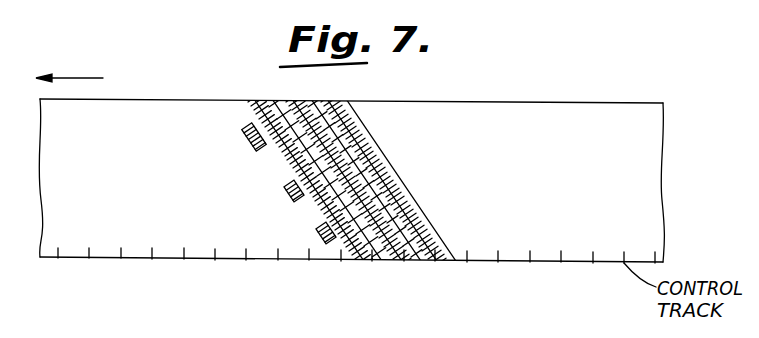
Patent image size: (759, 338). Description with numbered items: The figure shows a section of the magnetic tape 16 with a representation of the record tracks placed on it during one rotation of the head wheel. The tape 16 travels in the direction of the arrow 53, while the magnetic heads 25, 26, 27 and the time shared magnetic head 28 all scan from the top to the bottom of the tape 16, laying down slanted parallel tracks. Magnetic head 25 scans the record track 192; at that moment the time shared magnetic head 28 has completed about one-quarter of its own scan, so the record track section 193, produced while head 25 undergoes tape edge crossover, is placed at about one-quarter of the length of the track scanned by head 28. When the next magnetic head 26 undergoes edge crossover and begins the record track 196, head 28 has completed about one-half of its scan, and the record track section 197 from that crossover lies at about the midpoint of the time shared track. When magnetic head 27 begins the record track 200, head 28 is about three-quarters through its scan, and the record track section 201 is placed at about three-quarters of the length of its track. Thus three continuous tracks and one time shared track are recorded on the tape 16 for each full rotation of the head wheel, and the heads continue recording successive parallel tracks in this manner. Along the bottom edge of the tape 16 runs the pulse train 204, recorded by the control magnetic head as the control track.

The magnetic tape 16 is at (524, 102).
The arrow 53 is at (78, 78).
The pulse train 204 is at (117, 258).
The magnetic head 25 is at (355, 245).
The magnetic head 26 is at (394, 260).
The magnetic head 27 is at (437, 248).
The record track 192 is at (277, 102).
The record track 196 is at (307, 102).
The record track 200 is at (344, 110).
The time shared magnetic head 28 is at (214, 155).
The record track section 193 is at (244, 121).
The record track section 197 is at (287, 181).
The record track section 201 is at (296, 231).